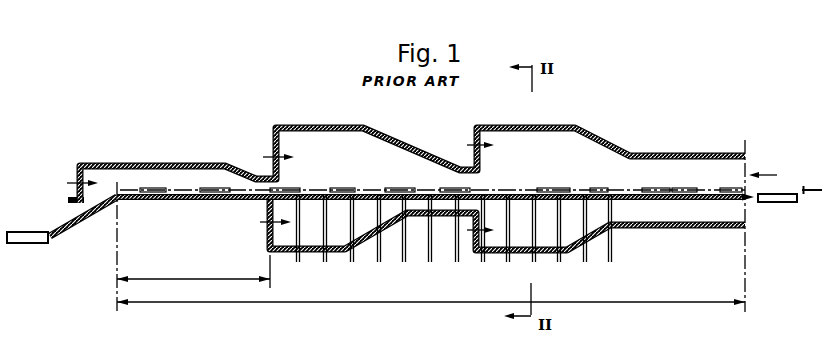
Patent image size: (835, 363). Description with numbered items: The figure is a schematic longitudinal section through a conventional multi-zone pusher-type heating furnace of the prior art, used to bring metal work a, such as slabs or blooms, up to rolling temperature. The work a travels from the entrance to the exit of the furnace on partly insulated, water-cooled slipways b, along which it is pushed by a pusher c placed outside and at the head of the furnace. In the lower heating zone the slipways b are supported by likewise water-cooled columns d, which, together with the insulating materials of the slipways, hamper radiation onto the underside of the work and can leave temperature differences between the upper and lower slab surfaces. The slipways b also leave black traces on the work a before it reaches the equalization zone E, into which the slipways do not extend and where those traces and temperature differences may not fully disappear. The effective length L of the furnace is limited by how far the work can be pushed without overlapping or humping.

The work a is at (625, 192).
The water-cooled slipways b is at (365, 205).
The pusher c is at (812, 187).
The water-cooled columns d is at (557, 207).
The equalization zone E is at (193, 271).
The effective length L is at (431, 293).